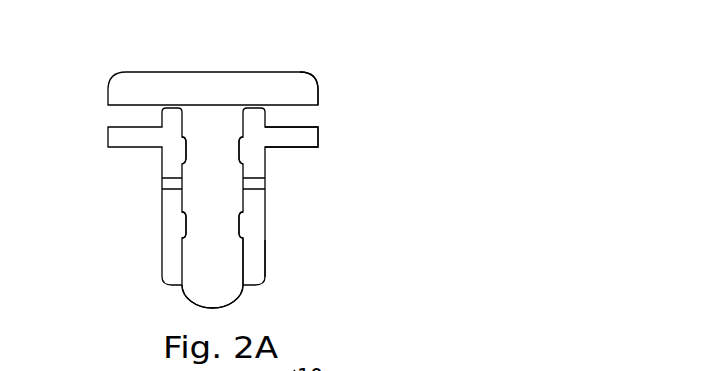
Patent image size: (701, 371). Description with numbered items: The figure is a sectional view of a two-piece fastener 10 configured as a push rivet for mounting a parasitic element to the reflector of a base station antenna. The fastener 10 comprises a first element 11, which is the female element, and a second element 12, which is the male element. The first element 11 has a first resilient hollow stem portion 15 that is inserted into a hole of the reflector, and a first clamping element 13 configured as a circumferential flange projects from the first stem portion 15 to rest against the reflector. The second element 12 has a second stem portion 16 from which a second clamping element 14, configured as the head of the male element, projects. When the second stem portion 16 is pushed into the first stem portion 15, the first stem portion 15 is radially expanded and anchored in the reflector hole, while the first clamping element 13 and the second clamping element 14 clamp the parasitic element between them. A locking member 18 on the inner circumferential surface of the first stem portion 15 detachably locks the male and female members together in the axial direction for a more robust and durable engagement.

The two-piece fastener 10 is at (218, 162).
The first element 11 is at (255, 205).
The second element 12 is at (215, 90).
The first clamping element 13 is at (300, 135).
The second clamping element 14 is at (300, 87).
The first resilient hollow stem portion 15 is at (256, 251).
The second stem portion 16 is at (222, 277).
The locking member 18 is at (185, 150).